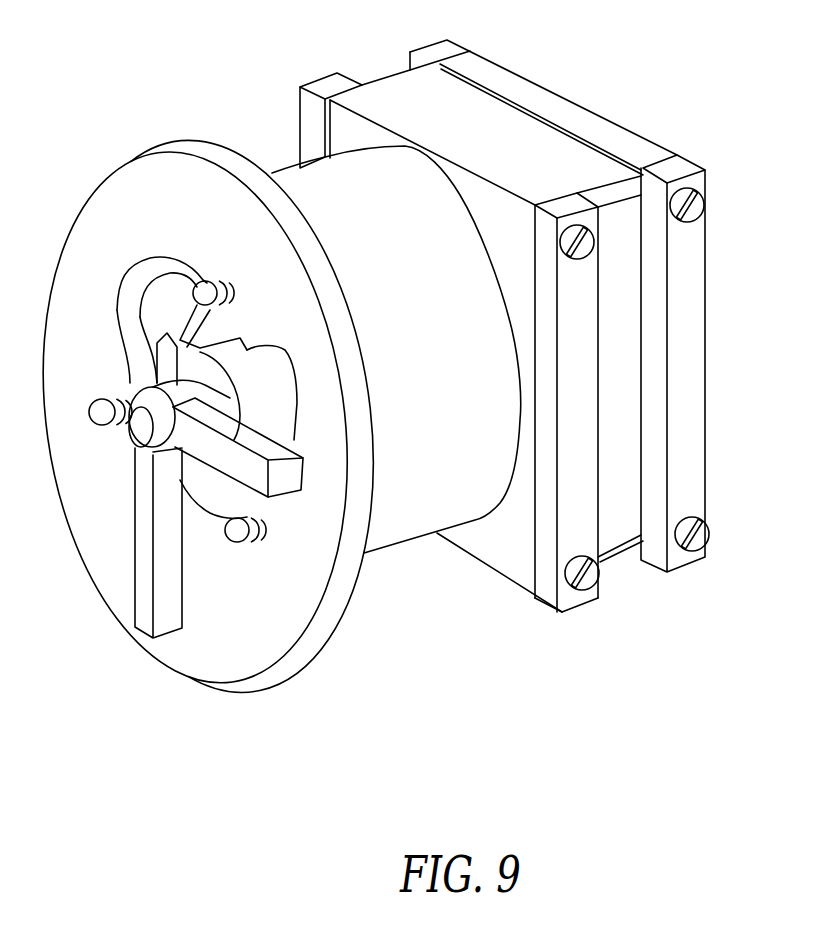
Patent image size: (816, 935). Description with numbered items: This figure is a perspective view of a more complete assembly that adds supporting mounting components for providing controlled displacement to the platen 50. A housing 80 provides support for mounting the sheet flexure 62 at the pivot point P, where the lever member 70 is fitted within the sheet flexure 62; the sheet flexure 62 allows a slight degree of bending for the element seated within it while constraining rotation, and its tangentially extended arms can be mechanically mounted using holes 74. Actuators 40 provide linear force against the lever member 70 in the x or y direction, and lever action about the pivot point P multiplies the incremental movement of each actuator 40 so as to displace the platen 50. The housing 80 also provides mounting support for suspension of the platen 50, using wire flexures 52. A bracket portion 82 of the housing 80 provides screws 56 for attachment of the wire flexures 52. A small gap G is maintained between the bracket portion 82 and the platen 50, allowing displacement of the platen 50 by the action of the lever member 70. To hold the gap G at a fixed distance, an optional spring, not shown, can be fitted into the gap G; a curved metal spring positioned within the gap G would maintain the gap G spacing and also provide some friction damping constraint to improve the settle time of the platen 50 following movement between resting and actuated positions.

The actuator 40 is at (137, 593).
The platen 50 is at (615, 124).
The wire flexure 52 is at (630, 537).
The screw 56 is at (588, 557).
The sheet flexure 62 is at (210, 513).
The lever member 70 is at (148, 387).
The hole 74 is at (207, 282).
The housing 80 is at (277, 174).
The bracket portion 82 is at (590, 601).
The gap G is at (411, 65).
The pivot point P is at (160, 322).